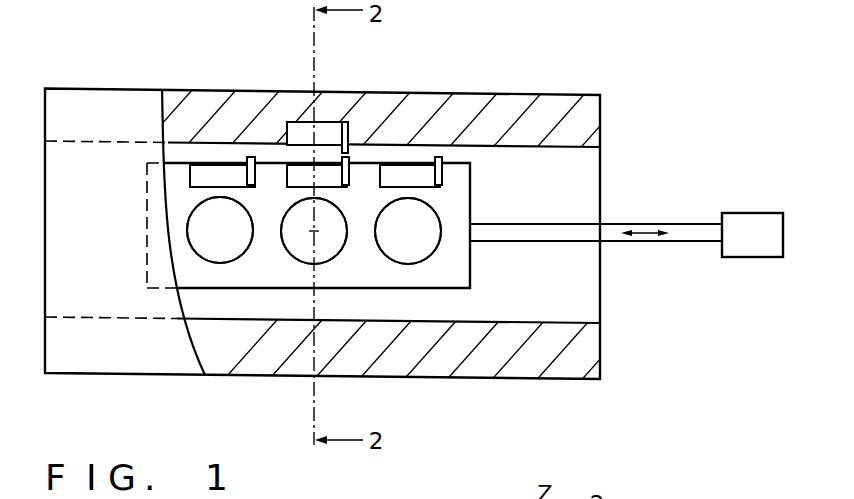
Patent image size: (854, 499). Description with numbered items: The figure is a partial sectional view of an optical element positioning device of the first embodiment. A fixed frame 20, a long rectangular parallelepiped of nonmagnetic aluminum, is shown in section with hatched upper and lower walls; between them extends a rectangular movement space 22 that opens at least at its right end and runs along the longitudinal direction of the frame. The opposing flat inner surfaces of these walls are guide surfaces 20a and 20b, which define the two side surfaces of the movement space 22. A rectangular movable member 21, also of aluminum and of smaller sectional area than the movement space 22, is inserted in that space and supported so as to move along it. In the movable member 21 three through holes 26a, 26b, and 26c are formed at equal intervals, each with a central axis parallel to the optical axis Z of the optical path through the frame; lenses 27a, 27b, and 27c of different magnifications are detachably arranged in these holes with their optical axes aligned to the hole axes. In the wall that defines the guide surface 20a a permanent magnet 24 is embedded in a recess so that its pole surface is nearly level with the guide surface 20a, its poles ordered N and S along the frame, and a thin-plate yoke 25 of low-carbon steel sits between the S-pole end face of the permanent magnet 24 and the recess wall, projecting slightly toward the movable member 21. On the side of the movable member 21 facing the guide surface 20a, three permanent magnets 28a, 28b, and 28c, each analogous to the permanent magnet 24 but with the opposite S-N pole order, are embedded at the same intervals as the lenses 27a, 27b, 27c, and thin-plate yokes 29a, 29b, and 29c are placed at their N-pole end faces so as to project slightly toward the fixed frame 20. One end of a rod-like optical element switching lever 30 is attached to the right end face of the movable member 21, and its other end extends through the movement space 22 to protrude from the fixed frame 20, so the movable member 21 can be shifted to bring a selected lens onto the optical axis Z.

The fixed frame 20 is at (598, 360).
The guide surface 20a is at (170, 150).
The guide surface 20b is at (571, 323).
The movable member 21 is at (470, 258).
The movement space 22 is at (593, 278).
The permanent magnet 24 is at (311, 122).
The yoke 25 is at (346, 122).
The through hole 26a is at (193, 257).
The through hole 26b is at (287, 246).
The through hole 26c is at (398, 265).
The lens 27a is at (202, 248).
The lens 27b is at (333, 249).
The lens 27c is at (430, 248).
The permanent magnet 28a is at (215, 163).
The permanent magnet 28b is at (290, 165).
The permanent magnet 28c is at (410, 165).
The yoke 29a is at (442, 173).
The yoke 29b is at (352, 157).
The yoke 29c is at (250, 157).
The optical element switching lever 30 is at (758, 258).
The optical axis Z is at (316, 229).